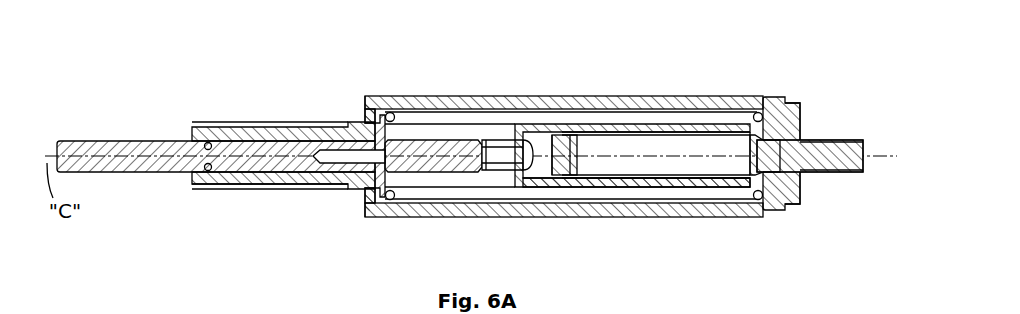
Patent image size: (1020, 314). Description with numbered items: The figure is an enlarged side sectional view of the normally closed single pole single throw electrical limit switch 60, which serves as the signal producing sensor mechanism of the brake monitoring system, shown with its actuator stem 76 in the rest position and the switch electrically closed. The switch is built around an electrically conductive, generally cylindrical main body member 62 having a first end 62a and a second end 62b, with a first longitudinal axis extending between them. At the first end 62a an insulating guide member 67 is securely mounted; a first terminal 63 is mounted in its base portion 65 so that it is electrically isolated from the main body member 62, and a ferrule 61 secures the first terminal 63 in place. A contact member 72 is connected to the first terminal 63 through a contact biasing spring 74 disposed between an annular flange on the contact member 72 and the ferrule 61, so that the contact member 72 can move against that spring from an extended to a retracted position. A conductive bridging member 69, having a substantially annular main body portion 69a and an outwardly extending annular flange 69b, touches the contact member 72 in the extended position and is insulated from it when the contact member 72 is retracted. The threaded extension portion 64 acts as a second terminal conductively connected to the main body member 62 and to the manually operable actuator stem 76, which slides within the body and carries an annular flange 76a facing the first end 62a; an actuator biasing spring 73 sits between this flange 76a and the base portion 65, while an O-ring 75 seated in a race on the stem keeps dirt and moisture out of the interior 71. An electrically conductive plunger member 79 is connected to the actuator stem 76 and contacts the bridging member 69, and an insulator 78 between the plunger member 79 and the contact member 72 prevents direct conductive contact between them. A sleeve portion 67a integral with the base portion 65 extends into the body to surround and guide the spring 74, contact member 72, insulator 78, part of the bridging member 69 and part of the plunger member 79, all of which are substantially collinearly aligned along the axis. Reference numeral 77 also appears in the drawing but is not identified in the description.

The limit switch 60 is at (634, 70).
The ferrule 61 is at (776, 171).
The main body member 62 is at (382, 97).
The first end 62a is at (783, 98).
The second end 62b is at (383, 114).
The first terminal 63 is at (865, 153).
The threaded extension portion 64 is at (213, 122).
The base portion 65 is at (803, 122).
The guide member 67 is at (800, 103).
The sleeve portion 67a is at (675, 128).
The conductive bridging member 69 is at (553, 186).
The main body portion 69a is at (565, 188).
The annular flange 69b is at (524, 188).
The interior 71 is at (419, 126).
The contact member 72 is at (572, 123).
The actuator biasing spring 73 is at (702, 200).
The contact biasing spring 74 is at (656, 178).
The O-ring 75 is at (204, 173).
The actuator stem 76 is at (77, 139).
The annular flange 76a is at (362, 120).
The sleeve bore 77 is at (237, 185).
The insulator 78 is at (503, 146).
The plunger member 79 is at (418, 170).